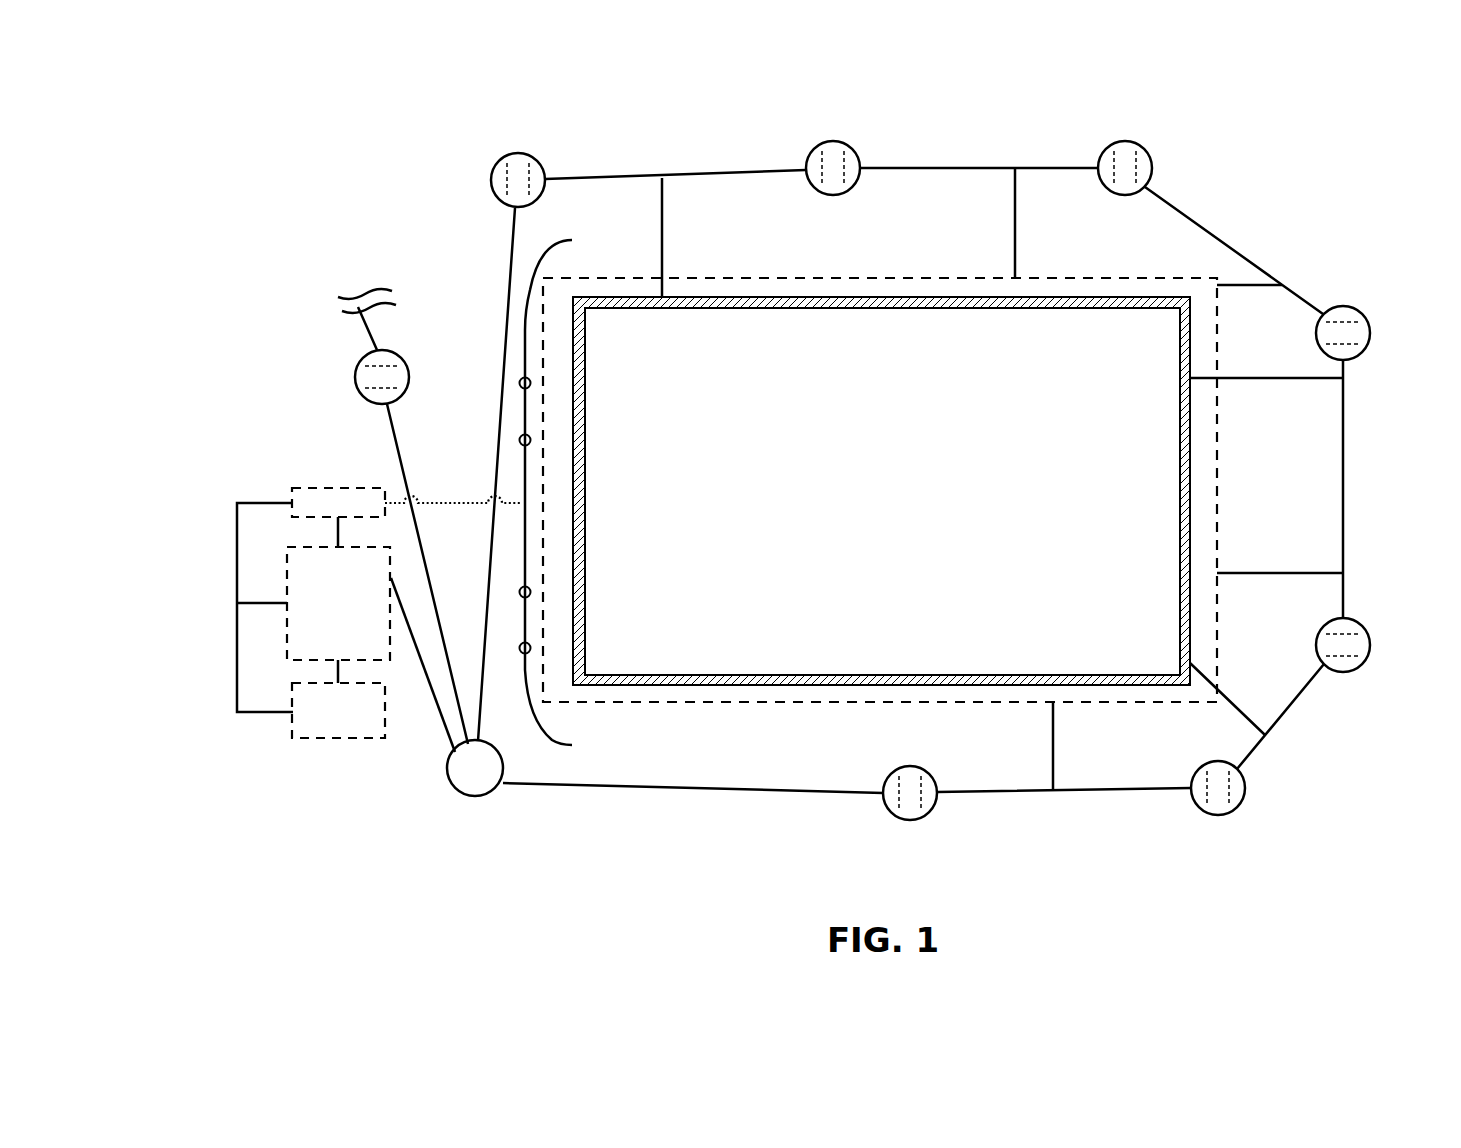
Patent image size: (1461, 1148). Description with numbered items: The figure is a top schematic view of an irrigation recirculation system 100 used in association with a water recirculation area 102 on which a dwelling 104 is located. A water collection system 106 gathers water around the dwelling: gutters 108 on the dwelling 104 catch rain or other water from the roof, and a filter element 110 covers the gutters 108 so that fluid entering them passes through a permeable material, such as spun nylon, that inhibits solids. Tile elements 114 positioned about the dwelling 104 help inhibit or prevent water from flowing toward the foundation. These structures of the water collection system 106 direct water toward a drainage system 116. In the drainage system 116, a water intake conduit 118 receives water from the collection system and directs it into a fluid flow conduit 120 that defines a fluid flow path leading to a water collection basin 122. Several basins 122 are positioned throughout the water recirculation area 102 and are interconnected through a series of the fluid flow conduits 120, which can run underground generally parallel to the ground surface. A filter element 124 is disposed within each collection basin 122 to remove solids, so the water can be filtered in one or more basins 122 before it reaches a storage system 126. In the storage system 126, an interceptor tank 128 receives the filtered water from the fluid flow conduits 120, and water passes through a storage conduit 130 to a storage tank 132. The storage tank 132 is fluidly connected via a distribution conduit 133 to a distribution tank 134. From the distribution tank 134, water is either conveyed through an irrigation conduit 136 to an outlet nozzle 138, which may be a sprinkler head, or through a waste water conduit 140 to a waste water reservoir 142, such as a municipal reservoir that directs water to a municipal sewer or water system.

The irrigation recirculation system 100 is at (1297, 148).
The water recirculation area 102 is at (970, 103).
The dwelling 104 is at (1015, 390).
The water collection system 106 is at (640, 153).
The gutters 108 is at (1120, 297).
The filter element 110 is at (925, 297).
The tile elements 114 is at (773, 278).
The drainage system 116 is at (817, 128).
The water intake conduit 118 is at (1053, 758).
The fluid flow conduit 120 is at (952, 163).
The water collection basin 122 is at (912, 820).
The filter element 124 is at (884, 808).
The storage system 126 is at (221, 546).
The interceptor tank 128 is at (476, 797).
The storage conduit 130 is at (443, 743).
The storage tank 132 is at (287, 628).
The distribution conduit 133 is at (338, 535).
The distribution tank 134 is at (310, 488).
The irrigation conduit 136 is at (462, 503).
The outlet nozzle 138 is at (571, 493).
The waste water conduit 140 is at (248, 503).
The waste water reservoir 142 is at (310, 740).